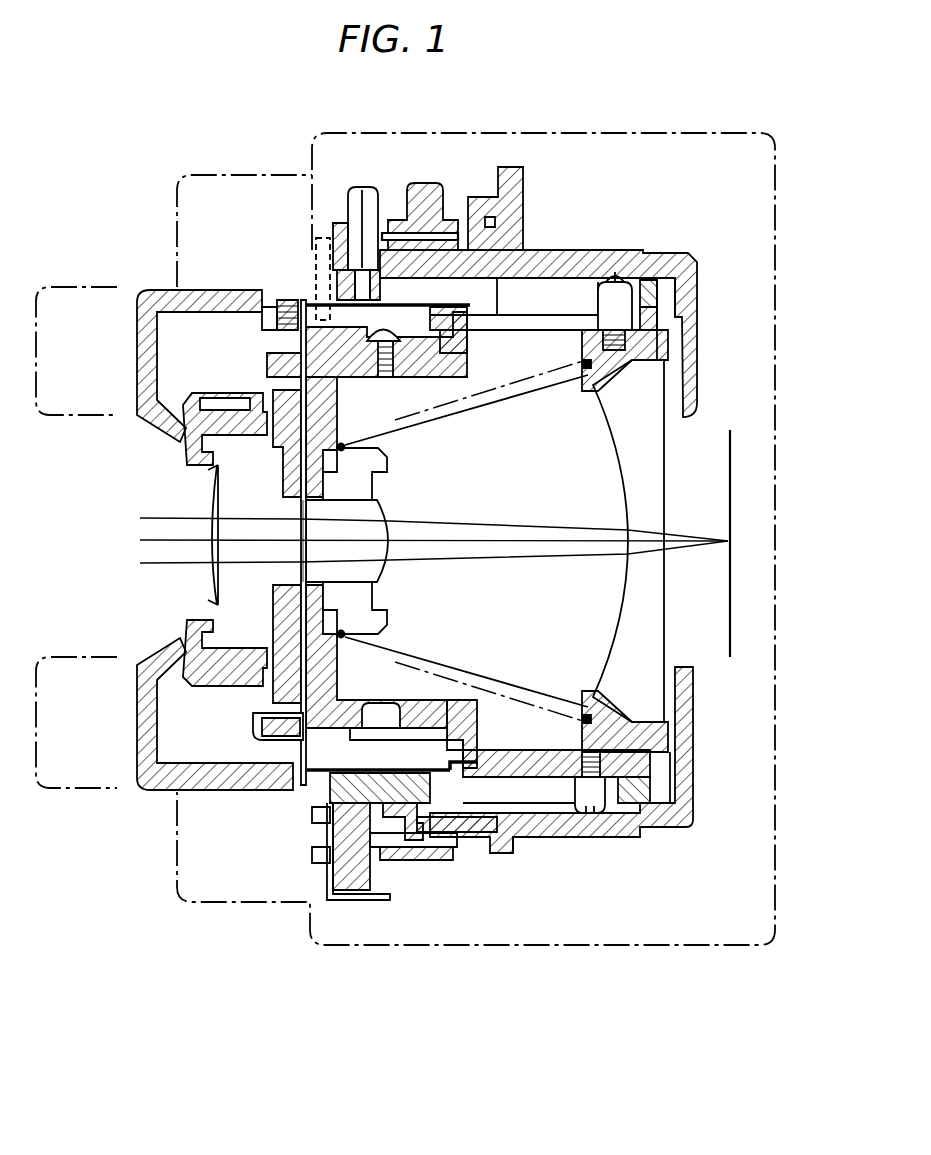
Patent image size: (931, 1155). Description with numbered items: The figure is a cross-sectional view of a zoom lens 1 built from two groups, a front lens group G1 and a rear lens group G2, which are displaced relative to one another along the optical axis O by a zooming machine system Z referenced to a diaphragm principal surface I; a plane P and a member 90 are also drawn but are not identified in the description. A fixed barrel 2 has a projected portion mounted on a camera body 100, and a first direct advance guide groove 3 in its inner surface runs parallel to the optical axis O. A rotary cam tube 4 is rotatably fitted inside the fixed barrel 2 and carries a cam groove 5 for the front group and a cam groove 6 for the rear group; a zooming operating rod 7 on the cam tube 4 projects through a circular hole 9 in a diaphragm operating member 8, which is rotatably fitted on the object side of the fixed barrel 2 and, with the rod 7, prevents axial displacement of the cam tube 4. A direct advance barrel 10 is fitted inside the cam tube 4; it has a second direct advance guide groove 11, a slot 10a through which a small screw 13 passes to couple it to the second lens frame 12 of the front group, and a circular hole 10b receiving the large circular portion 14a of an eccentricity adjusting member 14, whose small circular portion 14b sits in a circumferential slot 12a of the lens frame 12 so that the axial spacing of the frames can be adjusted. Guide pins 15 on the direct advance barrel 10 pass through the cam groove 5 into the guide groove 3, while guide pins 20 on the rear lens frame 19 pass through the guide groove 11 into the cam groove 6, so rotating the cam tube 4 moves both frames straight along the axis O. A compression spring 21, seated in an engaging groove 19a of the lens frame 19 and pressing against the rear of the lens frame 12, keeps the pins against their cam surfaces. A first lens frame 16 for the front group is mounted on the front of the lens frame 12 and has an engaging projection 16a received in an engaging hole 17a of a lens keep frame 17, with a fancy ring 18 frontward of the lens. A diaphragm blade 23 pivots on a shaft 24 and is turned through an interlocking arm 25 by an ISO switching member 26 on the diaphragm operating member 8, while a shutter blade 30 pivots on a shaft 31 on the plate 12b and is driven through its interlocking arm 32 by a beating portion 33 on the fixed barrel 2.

The zoom lens 1 is at (619, 181).
The fixed barrel 2 is at (609, 264).
The first direct advance guide groove 3 is at (545, 832).
The rotary cam tube 4 is at (638, 812).
The cam groove for the front lens group 5 is at (502, 797).
The cam groove for the rear lens group 6 is at (530, 290).
The zooming operating rod 7 is at (358, 195).
The diaphragm operating member 8 is at (430, 183).
The circular hole 9 is at (345, 230).
The direct advance barrel 10 is at (637, 767).
The slot 10a is at (378, 365).
The circular hole 10b is at (458, 835).
The second direct advance guide groove 11 is at (556, 310).
The second lens frame 12 is at (300, 752).
The circumferential slot 12a is at (392, 728).
The plate 12b is at (378, 492).
The small screw 13 is at (323, 312).
The eccentricity adjusting member 14 is at (359, 749).
The large circular portion 14a is at (437, 722).
The small circular portion 14b is at (400, 700).
The guide pin 15 is at (597, 802).
The first lens frame 16 is at (213, 640).
The engaging projection 16a is at (240, 410).
The lens keep frame 17 is at (200, 396).
The engaging hole 17a is at (226, 400).
The fancy ring 18 is at (145, 360).
The lens frame 19 is at (652, 744).
The engaging groove 19a is at (582, 708).
The guide pin 20 is at (634, 280).
The compression spring 21 is at (528, 388).
The diaphragm blade 23 is at (273, 690).
The shaft 24 is at (263, 713).
The interlocking arm 25 is at (393, 862).
The ISO switching member 26 is at (317, 847).
The shutter blade 30 is at (298, 502).
The shaft 31 is at (280, 352).
The interlocking arm 32 is at (393, 218).
The beating portion 33 is at (310, 243).
The cover block 90 is at (508, 168).
The body 100 is at (718, 925).
The front lens group G1 is at (228, 483).
The rear lens group G2 is at (655, 447).
The diaphragm principal surface I is at (297, 547).
The optical axis O is at (150, 541).
The image plane P is at (732, 632).
The zooming machine system Z is at (570, 297).